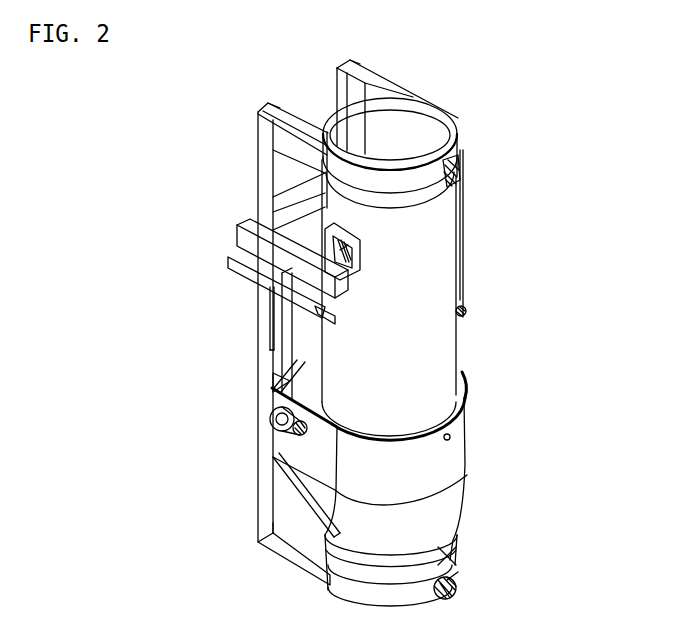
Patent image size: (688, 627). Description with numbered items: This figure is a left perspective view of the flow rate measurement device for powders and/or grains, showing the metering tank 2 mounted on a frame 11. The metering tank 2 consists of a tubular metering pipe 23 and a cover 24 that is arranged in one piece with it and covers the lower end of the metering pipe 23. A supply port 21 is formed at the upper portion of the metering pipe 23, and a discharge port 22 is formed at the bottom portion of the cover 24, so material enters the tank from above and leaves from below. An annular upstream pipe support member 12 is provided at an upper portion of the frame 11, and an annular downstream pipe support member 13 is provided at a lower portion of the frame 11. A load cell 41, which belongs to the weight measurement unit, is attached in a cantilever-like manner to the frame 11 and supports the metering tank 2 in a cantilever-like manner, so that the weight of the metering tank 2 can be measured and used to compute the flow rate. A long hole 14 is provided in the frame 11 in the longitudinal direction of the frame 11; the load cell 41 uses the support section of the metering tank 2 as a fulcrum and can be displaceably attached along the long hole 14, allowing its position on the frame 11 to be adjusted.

The metering tank 2 is at (427, 332).
The frame 11 is at (280, 325).
The upstream pipe support member 12 is at (268, 152).
The downstream pipe support member 13 is at (357, 590).
The long hole 14 is at (268, 313).
The supply port 21 is at (398, 155).
The discharge port 22 is at (453, 565).
The metering pipe 23 is at (432, 271).
The cover 24 is at (438, 488).
The load cell 41 is at (253, 247).